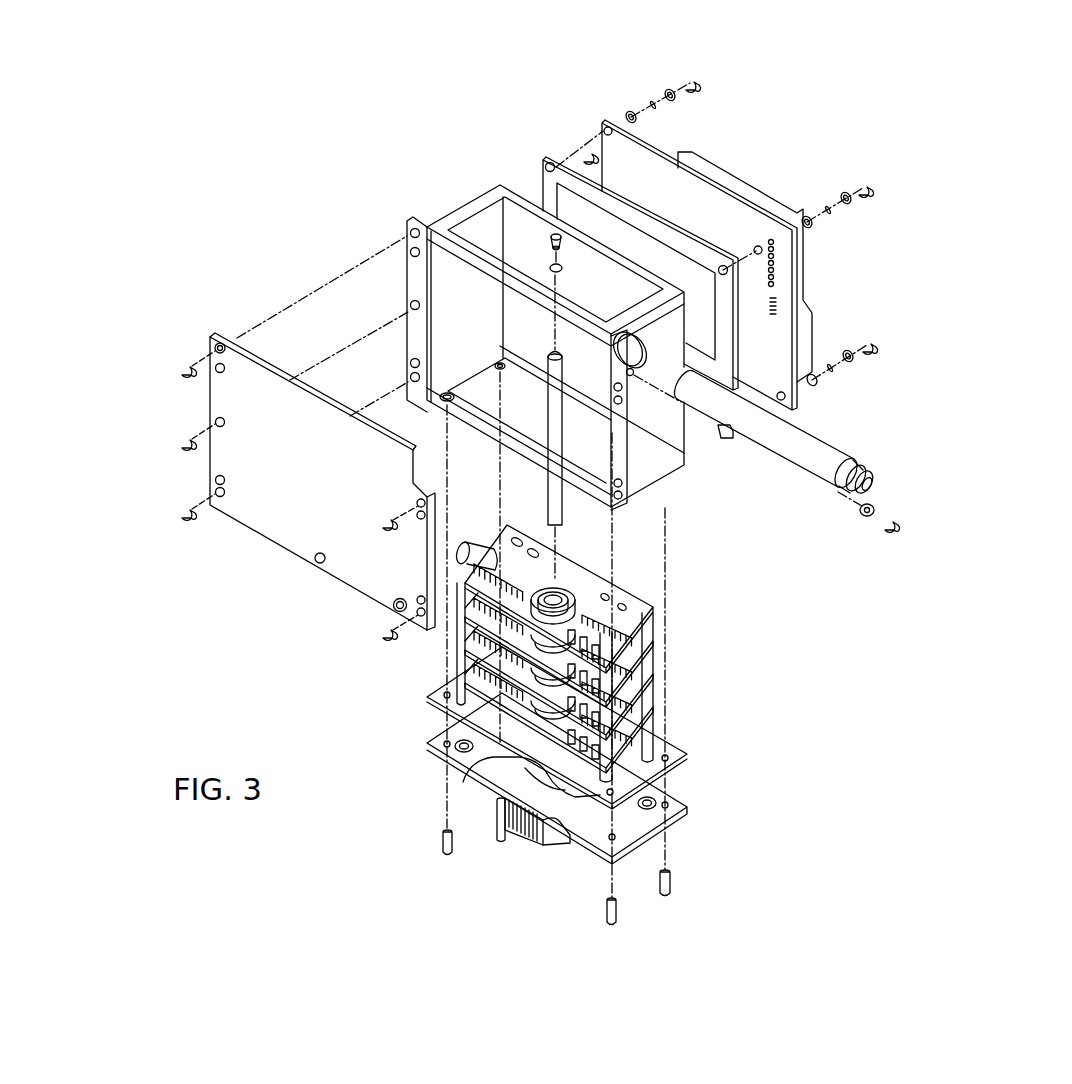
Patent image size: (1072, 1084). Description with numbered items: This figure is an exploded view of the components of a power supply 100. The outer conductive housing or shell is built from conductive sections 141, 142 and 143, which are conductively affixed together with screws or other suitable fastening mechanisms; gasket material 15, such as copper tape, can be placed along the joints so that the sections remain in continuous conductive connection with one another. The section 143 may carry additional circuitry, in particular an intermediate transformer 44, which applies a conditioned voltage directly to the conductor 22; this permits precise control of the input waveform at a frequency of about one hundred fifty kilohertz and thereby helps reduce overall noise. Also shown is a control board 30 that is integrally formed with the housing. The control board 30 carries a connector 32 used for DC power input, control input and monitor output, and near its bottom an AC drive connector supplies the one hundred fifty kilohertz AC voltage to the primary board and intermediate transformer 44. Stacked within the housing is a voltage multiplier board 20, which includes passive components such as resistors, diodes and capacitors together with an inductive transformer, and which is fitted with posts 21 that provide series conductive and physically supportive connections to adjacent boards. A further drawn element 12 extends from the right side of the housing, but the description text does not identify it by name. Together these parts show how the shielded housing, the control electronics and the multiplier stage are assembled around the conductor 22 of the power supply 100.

The power supply 100 is at (108, 486).
The shaft 12 is at (875, 458).
The conductive section 141 is at (407, 218).
The conductive section 142 is at (268, 356).
The conductive section 143 is at (683, 757).
The gasket material 15 is at (509, 263).
The voltage multiplier board 20 is at (384, 693).
The posts 21 is at (649, 723).
The conductor 22 is at (560, 515).
The control board 30 is at (714, 177).
The connector 32 is at (836, 273).
The intermediate transformer 44 is at (508, 760).